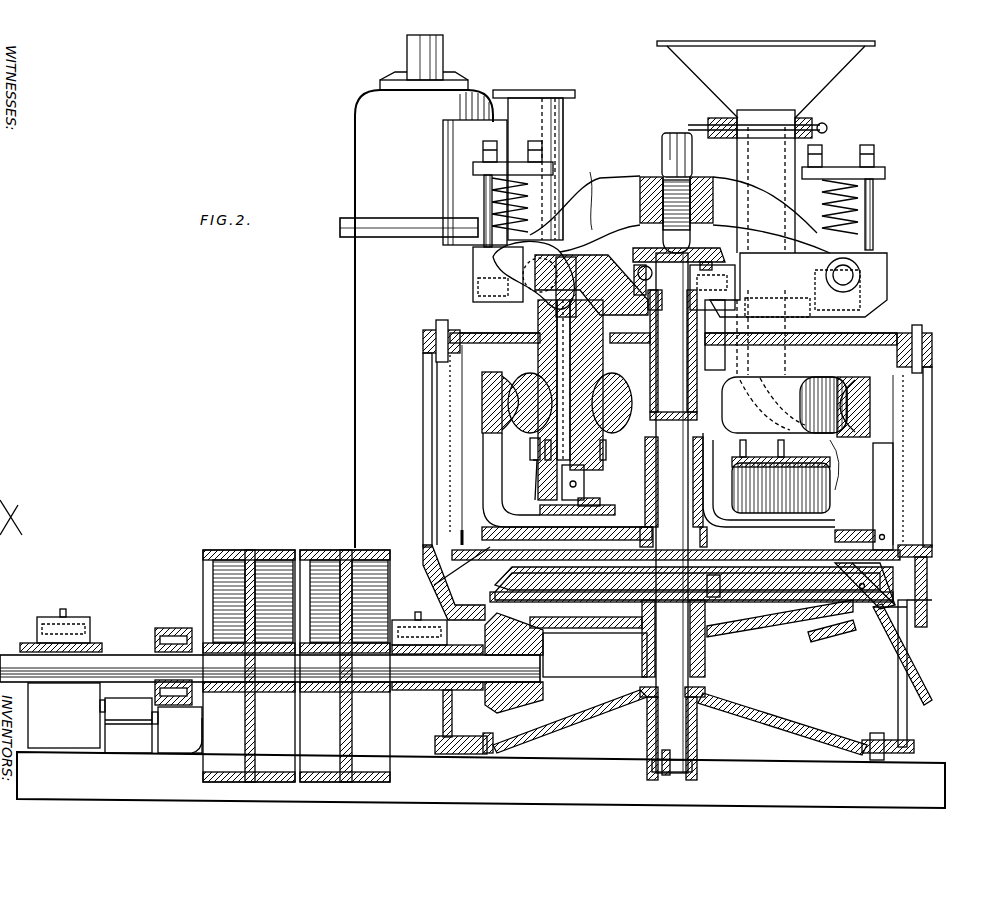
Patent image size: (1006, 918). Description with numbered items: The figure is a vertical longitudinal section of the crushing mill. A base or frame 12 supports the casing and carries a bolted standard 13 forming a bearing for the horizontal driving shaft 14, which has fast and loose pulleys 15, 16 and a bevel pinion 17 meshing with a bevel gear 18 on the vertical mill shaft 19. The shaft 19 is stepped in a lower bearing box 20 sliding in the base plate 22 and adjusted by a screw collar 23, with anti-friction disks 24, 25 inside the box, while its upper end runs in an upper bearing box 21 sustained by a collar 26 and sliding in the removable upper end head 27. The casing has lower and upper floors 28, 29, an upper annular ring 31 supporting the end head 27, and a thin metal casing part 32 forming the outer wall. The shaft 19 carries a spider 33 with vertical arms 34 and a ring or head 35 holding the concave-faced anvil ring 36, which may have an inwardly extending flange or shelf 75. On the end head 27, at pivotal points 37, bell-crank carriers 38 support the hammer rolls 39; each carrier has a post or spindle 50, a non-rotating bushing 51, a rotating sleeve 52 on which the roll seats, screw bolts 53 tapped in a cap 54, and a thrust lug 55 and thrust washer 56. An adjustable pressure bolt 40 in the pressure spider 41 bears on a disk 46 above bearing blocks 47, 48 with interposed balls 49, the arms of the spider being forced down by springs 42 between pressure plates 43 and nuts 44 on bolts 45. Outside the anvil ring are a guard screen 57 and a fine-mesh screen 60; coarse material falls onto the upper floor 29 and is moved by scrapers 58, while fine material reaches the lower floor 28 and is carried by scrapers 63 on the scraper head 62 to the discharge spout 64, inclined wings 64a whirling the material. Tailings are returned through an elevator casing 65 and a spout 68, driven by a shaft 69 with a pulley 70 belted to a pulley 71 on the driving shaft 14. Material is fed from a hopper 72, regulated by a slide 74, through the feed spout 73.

The base or frame 12 is at (481, 780).
The standard 13 is at (86, 681).
The driving shaft 14 is at (125, 652).
The fast pulley 15 is at (256, 550).
The loose pulley 16 is at (340, 550).
The bevel pinion 17 is at (543, 686).
The bevel gear 18 is at (790, 640).
The vertical mill shaft 19 is at (706, 668).
The lower bearing box 20 is at (645, 752).
The upper bearing box 21 is at (663, 423).
The base plate 22 is at (548, 745).
The screw collar 23 is at (640, 692).
The anti-friction disk 24 is at (697, 786).
The anti-friction disk 25 is at (648, 770).
The collar 26 is at (709, 415).
The upper end head 27 is at (896, 330).
The lower floor 28 is at (490, 597).
The upper floor 29 is at (440, 578).
The upper annular ring 31 is at (423, 350).
The casing part 32 is at (423, 399).
The spider 33 is at (482, 530).
The vertical arms 34 is at (855, 490).
The ring or head 35 is at (482, 416).
The anvil ring 36 is at (953, 410).
The pivotal point 37 is at (527, 272).
The bell-crank carrier 38 is at (591, 274).
The hammer roll 39 is at (677, 394).
The pressure bolt 40 is at (672, 142).
The pressure spider 41 is at (661, 242).
The spring 42 is at (492, 193).
The pressure plate 43 is at (516, 160).
The nut 44 is at (473, 163).
The bolt 45 is at (482, 247).
The disk 46 is at (679, 246).
The bearing block 47 is at (642, 262).
The bearing block 48 is at (662, 297).
The balls 49 is at (712, 286).
The post or spindle 50 is at (545, 360).
The non-rotating bushing 51 is at (530, 448).
The rotating sleeve 52 is at (570, 340).
The screw bolt 53 is at (687, 453).
The cap 54 is at (540, 490).
The thrust lug 55 is at (587, 506).
The thrust washer 56 is at (562, 500).
The guard screen 57 is at (460, 481).
The scraper 58 is at (470, 545).
The fine-mesh screen 60 is at (448, 458).
The scraper head 62 is at (512, 570).
The scraper 63 is at (880, 590).
The discharge spout 64 is at (930, 651).
The inclined wing 64a is at (880, 500).
The elevator casing 65 is at (356, 292).
The spout 68 is at (592, 190).
The shaft 69 is at (195, 752).
The pulley 70 is at (177, 730).
The pulley 71 is at (170, 628).
The hopper 72 is at (836, 70).
The feed spout 73 is at (766, 181).
The slide 74 is at (826, 126).
The flange or shelf 75 is at (850, 455).